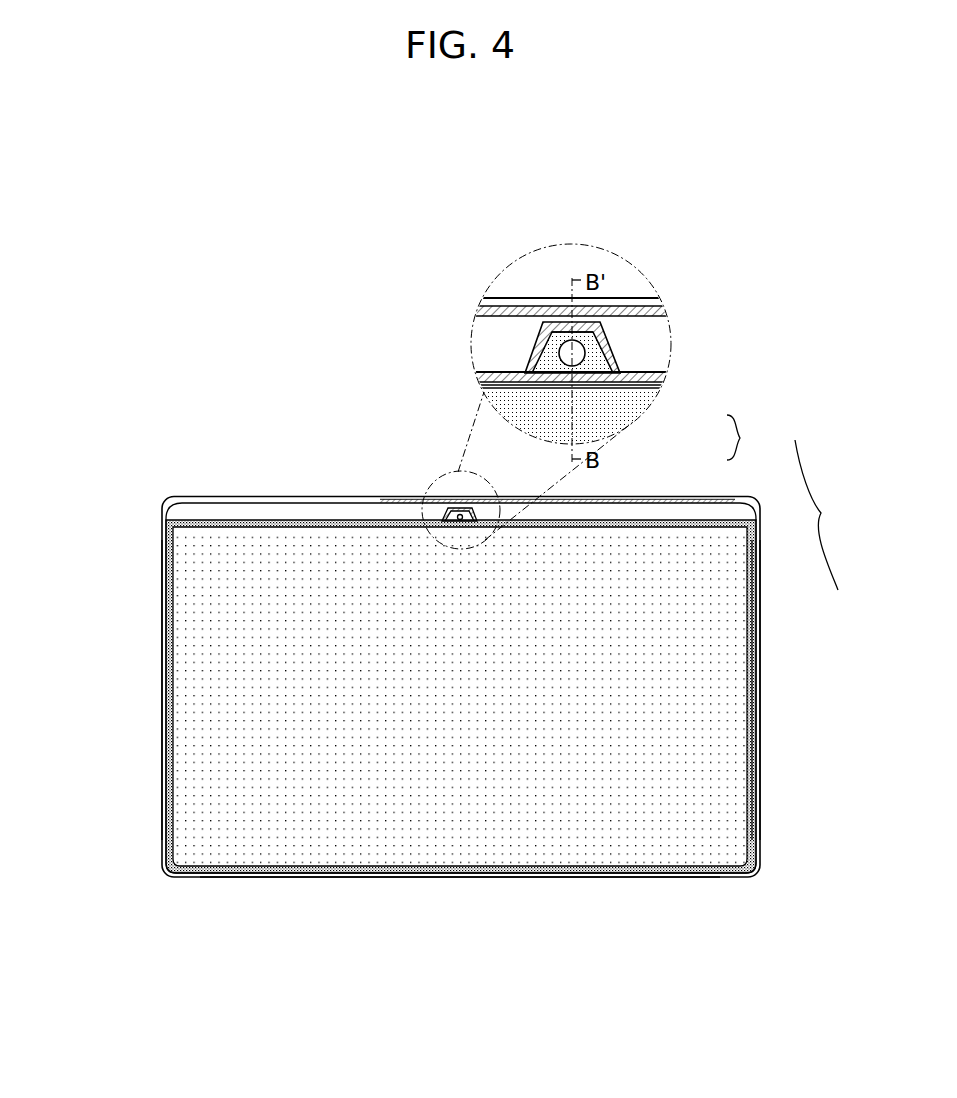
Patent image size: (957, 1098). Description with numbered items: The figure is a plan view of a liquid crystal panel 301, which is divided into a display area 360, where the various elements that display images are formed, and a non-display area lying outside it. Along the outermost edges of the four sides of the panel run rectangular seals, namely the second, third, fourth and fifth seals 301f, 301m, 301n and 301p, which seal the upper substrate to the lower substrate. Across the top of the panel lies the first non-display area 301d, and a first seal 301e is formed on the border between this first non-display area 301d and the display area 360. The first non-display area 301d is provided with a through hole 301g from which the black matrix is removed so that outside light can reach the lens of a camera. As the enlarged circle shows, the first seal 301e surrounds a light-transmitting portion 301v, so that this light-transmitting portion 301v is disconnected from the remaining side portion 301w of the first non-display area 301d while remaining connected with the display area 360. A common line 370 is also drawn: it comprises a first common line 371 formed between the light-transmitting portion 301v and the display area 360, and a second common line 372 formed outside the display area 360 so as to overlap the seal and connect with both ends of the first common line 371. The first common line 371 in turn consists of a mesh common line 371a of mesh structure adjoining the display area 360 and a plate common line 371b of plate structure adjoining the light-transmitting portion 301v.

The liquid crystal panel 301 is at (377, 496).
The third seal 301m is at (165, 650).
The fourth seal 301n is at (752, 700).
The fifth seal 301p is at (443, 873).
The first non-display area 301d is at (317, 513).
The second seal 301f is at (262, 498).
The first seal 301e is at (203, 520).
The through hole 301g is at (447, 508).
The light-transmitting portion 301v is at (553, 347).
The side portion 301w is at (643, 343).
The display area 360 is at (707, 777).
The common line 370 is at (827, 515).
The first common line 371 is at (795, 440).
The mesh common line 371a is at (552, 388).
The plate common line 371b is at (588, 380).
The second common line 372 is at (755, 600).